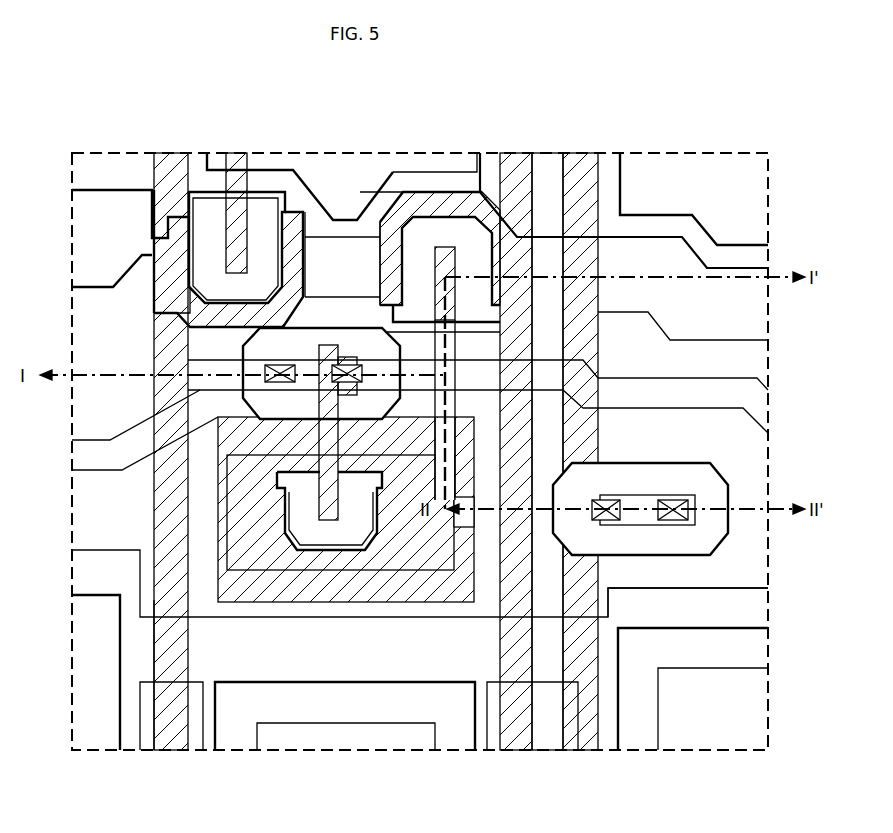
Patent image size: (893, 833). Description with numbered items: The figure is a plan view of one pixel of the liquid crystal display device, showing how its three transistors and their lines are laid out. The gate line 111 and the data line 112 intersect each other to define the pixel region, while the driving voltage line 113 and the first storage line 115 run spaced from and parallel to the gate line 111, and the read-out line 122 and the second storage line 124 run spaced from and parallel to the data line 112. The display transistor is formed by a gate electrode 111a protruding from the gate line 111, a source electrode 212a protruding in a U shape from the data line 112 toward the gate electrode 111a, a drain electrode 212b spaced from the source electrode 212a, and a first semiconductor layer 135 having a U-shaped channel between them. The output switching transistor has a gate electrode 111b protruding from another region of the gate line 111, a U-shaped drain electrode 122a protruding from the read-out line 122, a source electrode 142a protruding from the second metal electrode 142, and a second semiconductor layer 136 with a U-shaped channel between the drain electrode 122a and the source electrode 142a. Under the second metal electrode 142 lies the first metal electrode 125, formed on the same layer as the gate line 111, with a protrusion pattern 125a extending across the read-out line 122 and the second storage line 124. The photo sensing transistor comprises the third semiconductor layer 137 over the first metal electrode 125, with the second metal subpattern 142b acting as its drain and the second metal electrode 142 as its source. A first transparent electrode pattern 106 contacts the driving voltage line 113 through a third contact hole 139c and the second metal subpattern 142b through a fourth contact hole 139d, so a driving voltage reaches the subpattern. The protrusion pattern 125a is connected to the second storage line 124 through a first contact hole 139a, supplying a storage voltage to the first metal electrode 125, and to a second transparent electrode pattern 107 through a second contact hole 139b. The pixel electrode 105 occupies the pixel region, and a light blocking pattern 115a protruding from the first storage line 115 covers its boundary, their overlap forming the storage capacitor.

The pixel electrode 105 is at (443, 172).
The first transparent electrode pattern 106 is at (389, 410).
The second transparent electrode pattern 107 is at (725, 472).
The gate line 111 is at (750, 268).
The gate electrode 111a is at (300, 192).
The gate electrode 111b is at (490, 190).
The data line 112 is at (155, 640).
The driving voltage line 113 is at (96, 472).
The first storage line 115 is at (740, 588).
The light blocking pattern 115a is at (258, 735).
The read-out line 122 is at (540, 195).
The drain electrode 122a is at (418, 192).
The second storage line 124 is at (568, 177).
The first metal electrode 125 is at (413, 570).
The protrusion pattern 125a is at (648, 527).
The first semiconductor layer 135 is at (183, 205).
The second semiconductor layer 136 is at (502, 228).
The third semiconductor layer 137 is at (280, 508).
The first contact hole 139a is at (608, 497).
The second contact hole 139b is at (672, 495).
The third contact hole 139c is at (280, 363).
The fourth contact hole 139d is at (364, 350).
The second metal electrode 142 is at (272, 602).
The source electrode 142a is at (458, 380).
The second metal subpattern 142b is at (313, 435).
The source electrode 212a is at (304, 262).
The drain electrode 212b is at (258, 160).